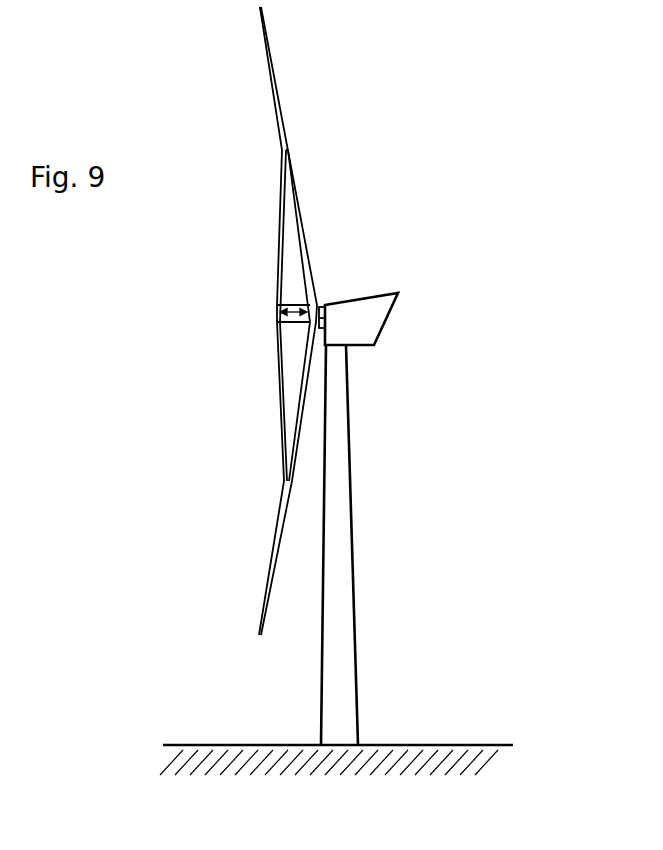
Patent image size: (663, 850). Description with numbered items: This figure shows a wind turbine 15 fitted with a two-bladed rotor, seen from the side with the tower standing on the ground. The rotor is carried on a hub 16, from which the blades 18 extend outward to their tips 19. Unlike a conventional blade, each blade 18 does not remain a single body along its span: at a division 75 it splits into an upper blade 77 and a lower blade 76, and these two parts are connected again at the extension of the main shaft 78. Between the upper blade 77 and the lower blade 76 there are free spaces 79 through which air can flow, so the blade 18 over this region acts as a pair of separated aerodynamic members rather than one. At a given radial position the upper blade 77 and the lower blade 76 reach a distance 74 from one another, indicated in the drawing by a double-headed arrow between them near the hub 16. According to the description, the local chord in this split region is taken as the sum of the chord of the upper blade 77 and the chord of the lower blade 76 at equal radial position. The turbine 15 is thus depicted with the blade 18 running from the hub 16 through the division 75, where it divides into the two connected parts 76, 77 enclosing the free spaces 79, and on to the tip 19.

The turbine 15 is at (452, 395).
The hub 16 is at (320, 331).
The blade 18 is at (281, 107).
The tip 19 is at (263, 18).
The distance 74 is at (298, 308).
The division 75 is at (290, 158).
The lower blade 76 is at (301, 205).
The upper blade 77 is at (279, 223).
The extension of the main shaft 78 is at (296, 323).
The free spaces 79 is at (292, 267).